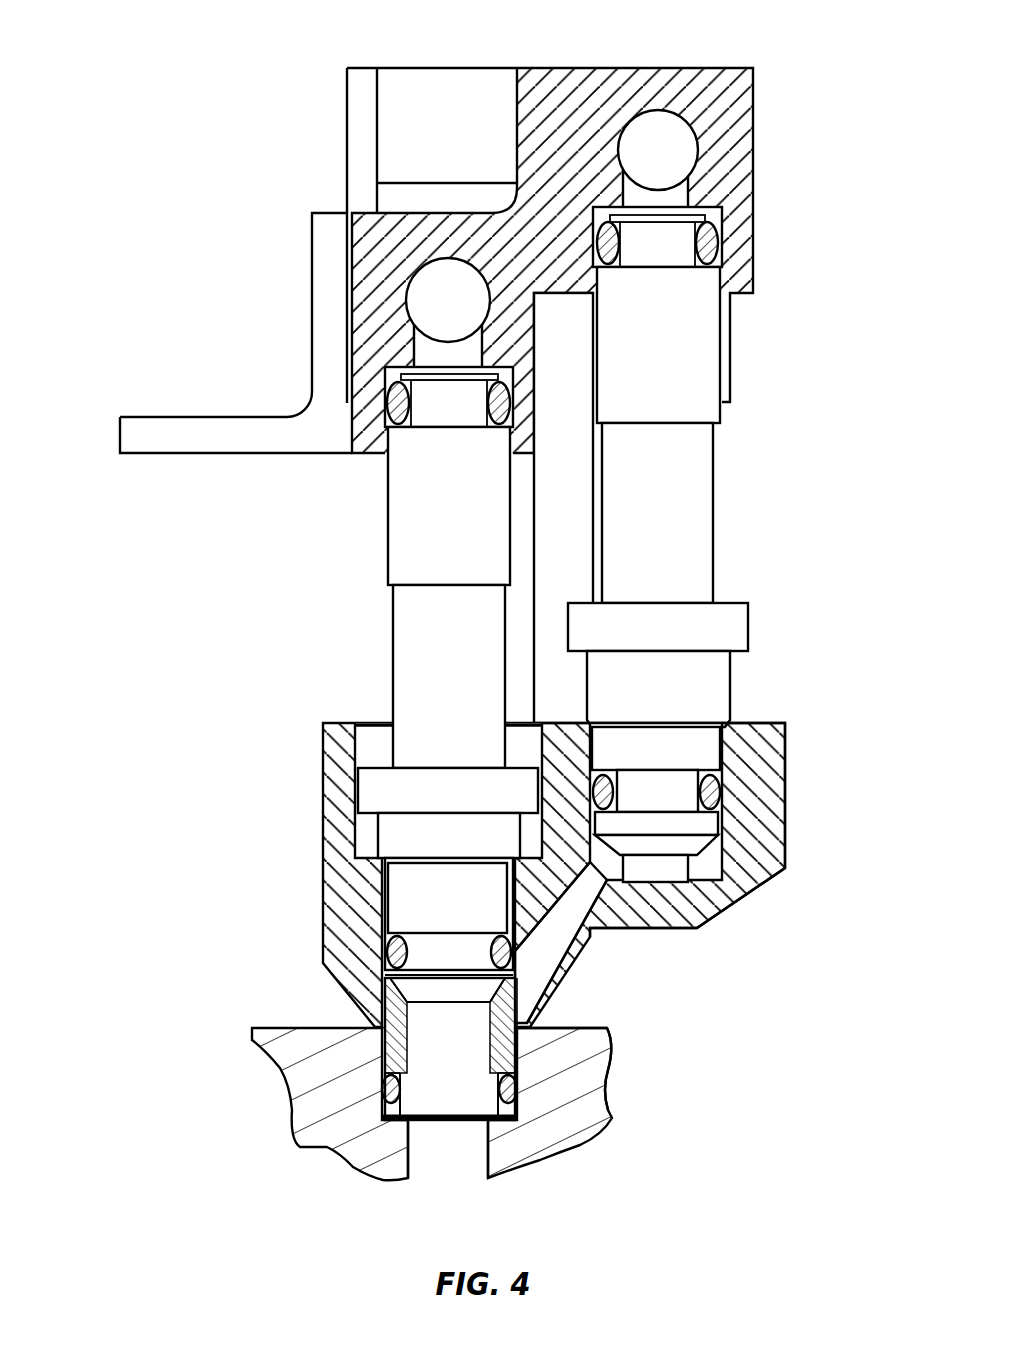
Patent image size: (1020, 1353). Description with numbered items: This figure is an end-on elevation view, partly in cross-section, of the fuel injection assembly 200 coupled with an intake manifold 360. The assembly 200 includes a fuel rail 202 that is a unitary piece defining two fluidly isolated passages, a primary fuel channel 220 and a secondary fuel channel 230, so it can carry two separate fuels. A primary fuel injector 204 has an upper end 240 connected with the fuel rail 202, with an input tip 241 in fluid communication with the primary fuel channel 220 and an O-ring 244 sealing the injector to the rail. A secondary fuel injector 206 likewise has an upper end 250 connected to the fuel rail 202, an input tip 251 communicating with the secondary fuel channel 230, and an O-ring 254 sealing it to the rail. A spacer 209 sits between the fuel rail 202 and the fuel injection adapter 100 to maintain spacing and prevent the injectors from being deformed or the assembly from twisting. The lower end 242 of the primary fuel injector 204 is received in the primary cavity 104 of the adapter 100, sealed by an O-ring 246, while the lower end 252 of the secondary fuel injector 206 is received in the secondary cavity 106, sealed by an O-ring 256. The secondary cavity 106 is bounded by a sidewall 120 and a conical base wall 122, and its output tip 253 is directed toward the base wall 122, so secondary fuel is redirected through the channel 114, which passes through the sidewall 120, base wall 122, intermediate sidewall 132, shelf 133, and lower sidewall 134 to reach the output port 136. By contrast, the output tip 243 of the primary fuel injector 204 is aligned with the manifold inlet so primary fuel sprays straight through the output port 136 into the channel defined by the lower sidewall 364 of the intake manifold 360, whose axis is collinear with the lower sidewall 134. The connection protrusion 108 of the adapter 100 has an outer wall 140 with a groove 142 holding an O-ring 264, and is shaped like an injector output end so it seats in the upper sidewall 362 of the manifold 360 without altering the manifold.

The fuel injection adapter 100 is at (330, 870).
The primary cavity 104 is at (386, 1000).
The secondary cavity 106 is at (610, 870).
The connection protrusion 108 is at (375, 1051).
The channel 114 is at (568, 924).
The sidewall 120 is at (713, 848).
The base wall 122 is at (717, 915).
The intermediate sidewall 132 is at (383, 993).
The shelf 133 is at (513, 1017).
The lower sidewall 134 is at (297, 1147).
The output port 136 is at (445, 1089).
The outer wall 140 is at (583, 1030).
The groove 142 is at (507, 1127).
The fuel injection assembly 200 is at (113, 186).
The fuel rail 202 is at (612, 80).
The primary fuel injector 204 is at (412, 642).
The secondary fuel injector 206 is at (668, 543).
The spacer 209 is at (567, 488).
The primary fuel channel 220 is at (428, 290).
The secondary fuel channel 230 is at (677, 160).
The upper end 240 is at (432, 434).
The input tip 241 is at (432, 375).
The lower end 242 is at (446, 904).
The output tip 243 is at (382, 1080).
The O-ring 244 is at (384, 410).
The O-ring 246 is at (384, 940).
The upper end 250 is at (668, 266).
The input tip 251 is at (677, 219).
The lower end 252 is at (676, 772).
The output tip 253 is at (645, 904).
The O-ring 254 is at (709, 246).
The O-ring 256 is at (714, 790).
The O-ring 264 is at (387, 1080).
The intake manifold 360 is at (567, 1122).
The upper sidewall 362 is at (608, 1082).
The lower sidewall 364 is at (423, 1090).